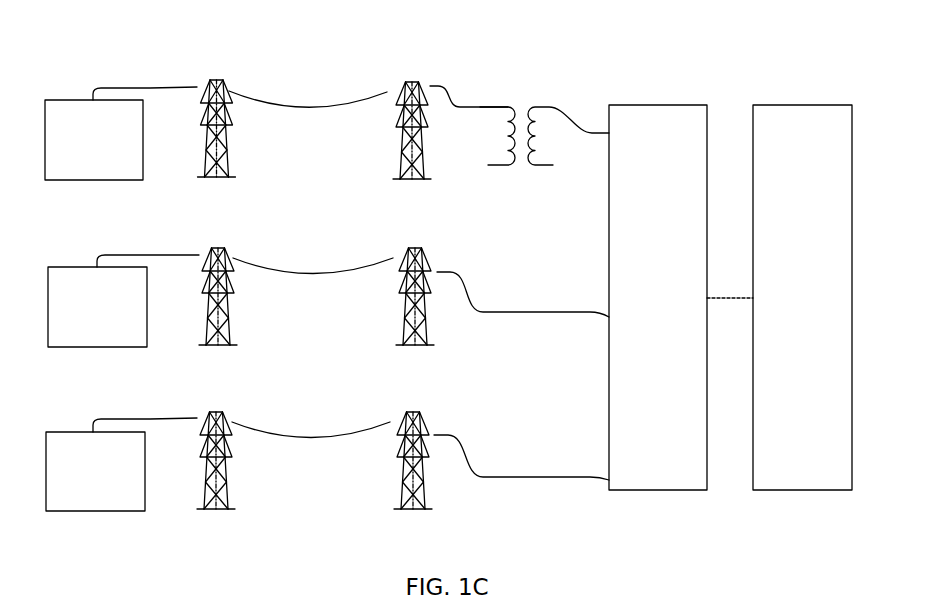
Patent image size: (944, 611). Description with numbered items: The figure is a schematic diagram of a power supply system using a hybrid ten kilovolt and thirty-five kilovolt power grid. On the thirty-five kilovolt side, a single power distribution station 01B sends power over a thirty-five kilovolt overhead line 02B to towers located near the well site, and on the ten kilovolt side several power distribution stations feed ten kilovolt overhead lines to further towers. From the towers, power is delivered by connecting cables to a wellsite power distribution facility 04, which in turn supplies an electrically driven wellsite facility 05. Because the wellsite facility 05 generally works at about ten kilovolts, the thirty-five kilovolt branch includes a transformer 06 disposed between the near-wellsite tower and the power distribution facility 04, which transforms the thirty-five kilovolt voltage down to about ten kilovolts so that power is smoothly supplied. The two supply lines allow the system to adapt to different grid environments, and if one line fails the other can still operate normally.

The 35 kV power distribution station 01B is at (94, 140).
The 35 kV overhead line 02B is at (308, 102).
The wellsite power distribution facility 04 is at (658, 297).
The electrically driven wellsite facility 05 is at (802, 297).
The transformer 06 is at (544, 149).